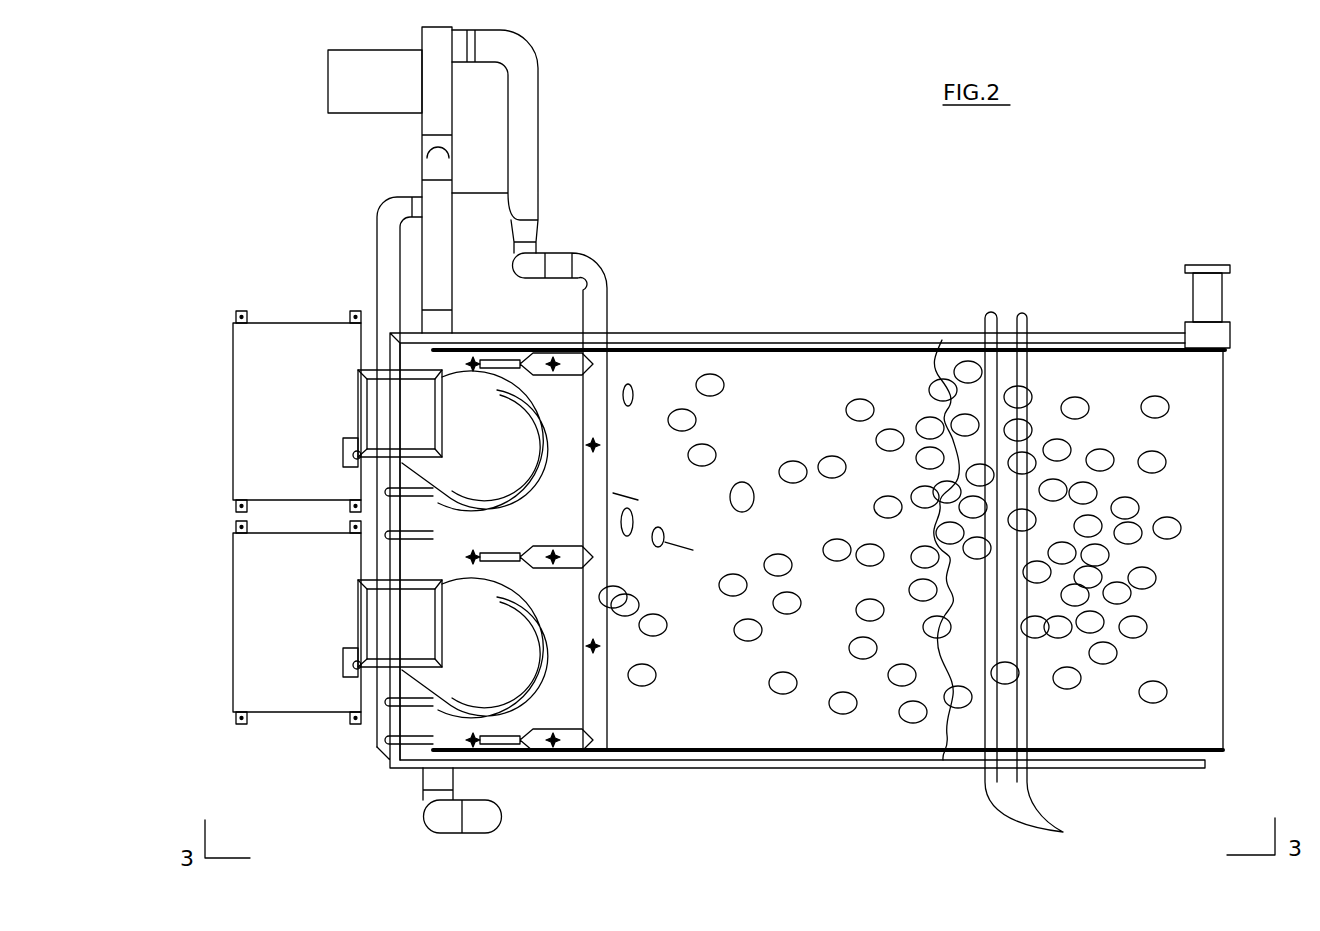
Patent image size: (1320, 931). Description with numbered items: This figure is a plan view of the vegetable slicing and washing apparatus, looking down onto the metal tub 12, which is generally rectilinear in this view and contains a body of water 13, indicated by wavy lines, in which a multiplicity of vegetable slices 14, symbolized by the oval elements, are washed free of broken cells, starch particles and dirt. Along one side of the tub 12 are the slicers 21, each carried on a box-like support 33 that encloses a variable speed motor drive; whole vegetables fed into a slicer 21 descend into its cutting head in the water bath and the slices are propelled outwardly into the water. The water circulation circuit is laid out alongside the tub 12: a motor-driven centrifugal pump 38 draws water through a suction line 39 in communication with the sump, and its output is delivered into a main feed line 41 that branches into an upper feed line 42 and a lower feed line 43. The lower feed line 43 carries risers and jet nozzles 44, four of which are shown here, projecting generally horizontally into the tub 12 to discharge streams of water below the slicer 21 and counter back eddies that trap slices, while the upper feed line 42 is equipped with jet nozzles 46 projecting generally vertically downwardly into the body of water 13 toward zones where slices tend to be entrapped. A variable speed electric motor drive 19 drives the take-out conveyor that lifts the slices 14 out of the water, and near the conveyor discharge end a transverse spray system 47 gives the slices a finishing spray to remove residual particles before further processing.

The tub 12 is at (760, 768).
The body of water 13 is at (943, 665).
The vegetable slices 14 is at (1157, 407).
The variable speed electric motor drive 19 is at (1185, 265).
The slicer 21 is at (393, 652).
The box-like support 33 is at (233, 425).
The centrifugal pump 38 is at (328, 90).
The suction line 39 is at (422, 146).
The main feed line 41 is at (538, 148).
The upper feed line 42 is at (607, 283).
The lower feed line 43 is at (377, 268).
The jet nozzles 44 is at (420, 743).
The jet nozzles 46 is at (475, 742).
The transverse spray system 47 is at (1039, 581).